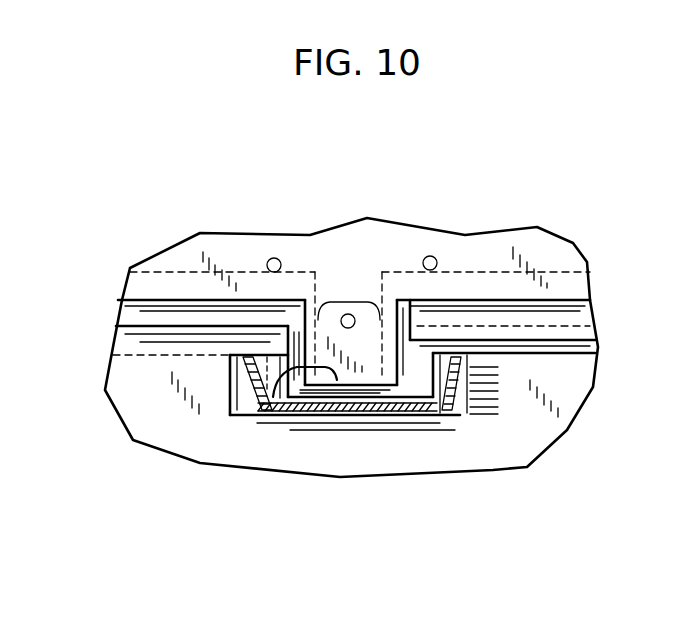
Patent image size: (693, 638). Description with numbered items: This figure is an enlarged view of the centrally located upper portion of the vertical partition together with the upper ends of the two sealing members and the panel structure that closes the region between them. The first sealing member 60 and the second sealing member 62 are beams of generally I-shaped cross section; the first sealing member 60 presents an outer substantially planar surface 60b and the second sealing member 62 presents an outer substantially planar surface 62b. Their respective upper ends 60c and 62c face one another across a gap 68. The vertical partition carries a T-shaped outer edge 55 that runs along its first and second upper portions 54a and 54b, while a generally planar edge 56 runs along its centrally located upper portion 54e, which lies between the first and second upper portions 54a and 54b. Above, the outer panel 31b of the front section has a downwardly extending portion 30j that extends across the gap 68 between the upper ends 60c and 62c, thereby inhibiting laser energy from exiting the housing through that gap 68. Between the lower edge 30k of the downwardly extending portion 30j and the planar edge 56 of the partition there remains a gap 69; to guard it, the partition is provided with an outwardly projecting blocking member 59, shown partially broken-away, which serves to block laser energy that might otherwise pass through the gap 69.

The downwardly extending portion 30j is at (337, 385).
The lower edge 30k is at (273, 397).
The outer panel 31b is at (557, 255).
The first upper portion 54a is at (168, 363).
The second upper portion 54b is at (518, 370).
The centrally located upper portion 54e is at (363, 407).
The T-shaped outer edge 55 is at (120, 330).
The generally planar edge 56 is at (314, 378).
The outwardly projecting blocking member 59 is at (360, 388).
The first sealing member 60 is at (205, 320).
The outer substantially planar surface 60b is at (260, 317).
The upper end 60c is at (300, 328).
The second sealing member 62 is at (577, 315).
The outer substantially planar surface 62b is at (583, 330).
The upper end 62c is at (410, 330).
The gap 68 is at (346, 300).
The gap 69 is at (387, 386).